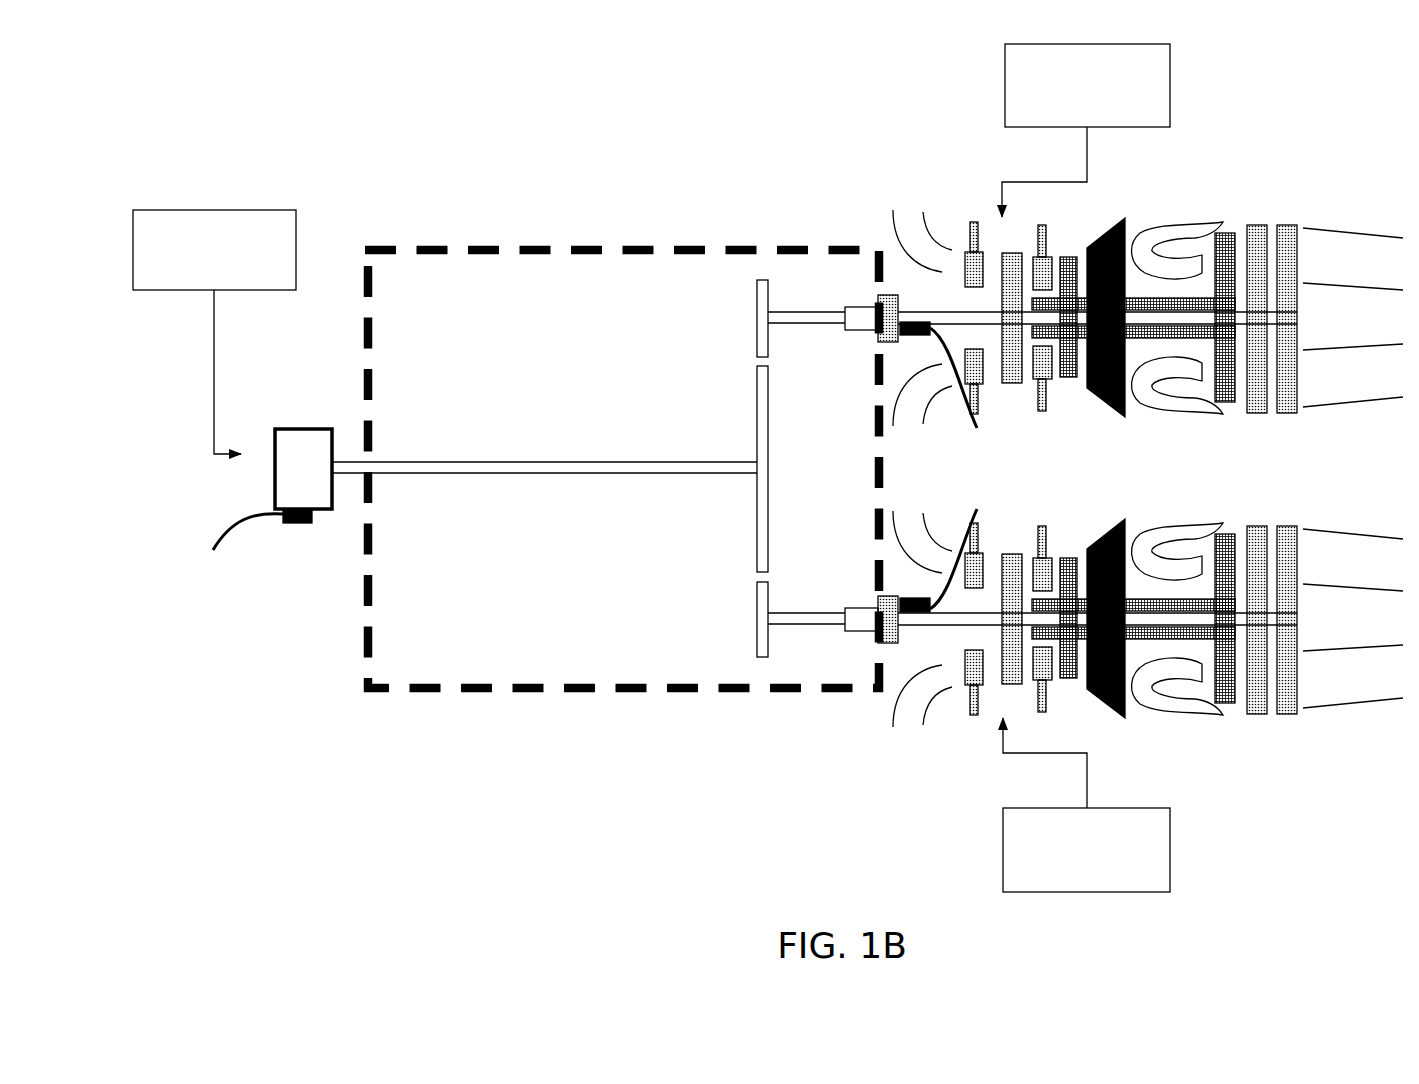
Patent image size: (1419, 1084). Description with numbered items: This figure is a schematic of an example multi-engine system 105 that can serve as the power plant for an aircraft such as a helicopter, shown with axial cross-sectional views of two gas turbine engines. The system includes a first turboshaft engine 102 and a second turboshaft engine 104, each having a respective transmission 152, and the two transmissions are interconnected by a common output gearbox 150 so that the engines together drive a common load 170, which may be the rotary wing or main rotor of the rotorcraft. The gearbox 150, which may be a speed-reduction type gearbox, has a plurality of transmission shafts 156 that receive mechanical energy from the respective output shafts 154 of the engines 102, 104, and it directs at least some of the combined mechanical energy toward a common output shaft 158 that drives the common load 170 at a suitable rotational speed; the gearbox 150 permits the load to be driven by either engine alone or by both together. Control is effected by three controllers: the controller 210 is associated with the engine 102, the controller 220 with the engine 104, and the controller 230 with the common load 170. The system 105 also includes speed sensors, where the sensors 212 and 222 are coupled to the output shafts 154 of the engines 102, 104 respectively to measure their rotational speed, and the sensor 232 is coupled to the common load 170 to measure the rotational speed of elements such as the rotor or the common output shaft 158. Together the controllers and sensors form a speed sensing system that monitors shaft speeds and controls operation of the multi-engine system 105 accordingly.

The first turboshaft engine 102 is at (1148, 413).
The second turboshaft engine 104 is at (1148, 691).
The multi-engine system 105 is at (424, 170).
The common output gearbox 150 is at (583, 690).
The transmission 152 is at (851, 343).
The output shaft 154 is at (925, 308).
The transmission shaft 156 is at (808, 311).
The common output shaft 158 is at (350, 475).
The common load 170 is at (305, 428).
The controller 210 is at (1063, 119).
The speed sensor 212 is at (973, 383).
The controller 220 is at (1063, 884).
The speed sensor 222 is at (973, 551).
The controller 230 is at (190, 285).
The speed sensor 232 is at (249, 553).